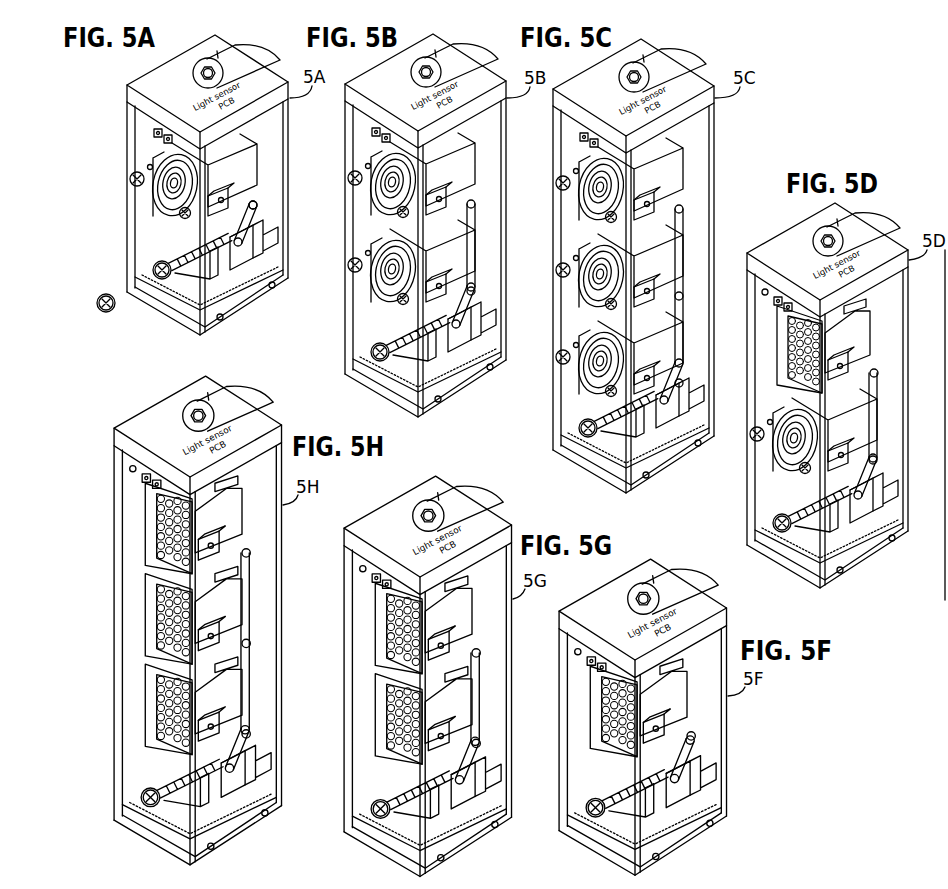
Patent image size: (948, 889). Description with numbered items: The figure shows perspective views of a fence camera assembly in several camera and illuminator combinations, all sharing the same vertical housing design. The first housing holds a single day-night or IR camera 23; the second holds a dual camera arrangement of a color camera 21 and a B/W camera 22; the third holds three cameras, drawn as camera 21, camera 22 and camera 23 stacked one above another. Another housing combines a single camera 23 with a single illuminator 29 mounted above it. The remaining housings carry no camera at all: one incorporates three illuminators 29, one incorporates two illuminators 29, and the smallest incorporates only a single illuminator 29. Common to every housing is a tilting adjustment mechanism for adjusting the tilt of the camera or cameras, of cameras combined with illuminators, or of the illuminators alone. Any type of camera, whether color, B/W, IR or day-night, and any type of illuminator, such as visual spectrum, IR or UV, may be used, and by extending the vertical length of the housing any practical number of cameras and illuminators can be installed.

In FIG. 5B, the color camera 21 is at (378, 144).
In FIG. 5C, the color camera 21 is at (575, 152).
In FIG. 5B, the B/W camera 22 is at (375, 300).
In FIG. 5C, the B/W camera 22 is at (580, 237).
In FIG. 5A, the day-night or IR camera 23 is at (150, 134).
In FIG. 5C, the day-night or IR camera 23 is at (580, 314).
In FIG. 5D, the day-night or IR camera 23 is at (862, 425).
In FIG. 5D, the illuminator 29 is at (842, 340).
In FIG. 5H, the illuminator 29 is at (150, 500).
In FIG. 5G, the illuminator 29 is at (385, 608).
In FIG. 5F, the illuminator 29 is at (600, 696).